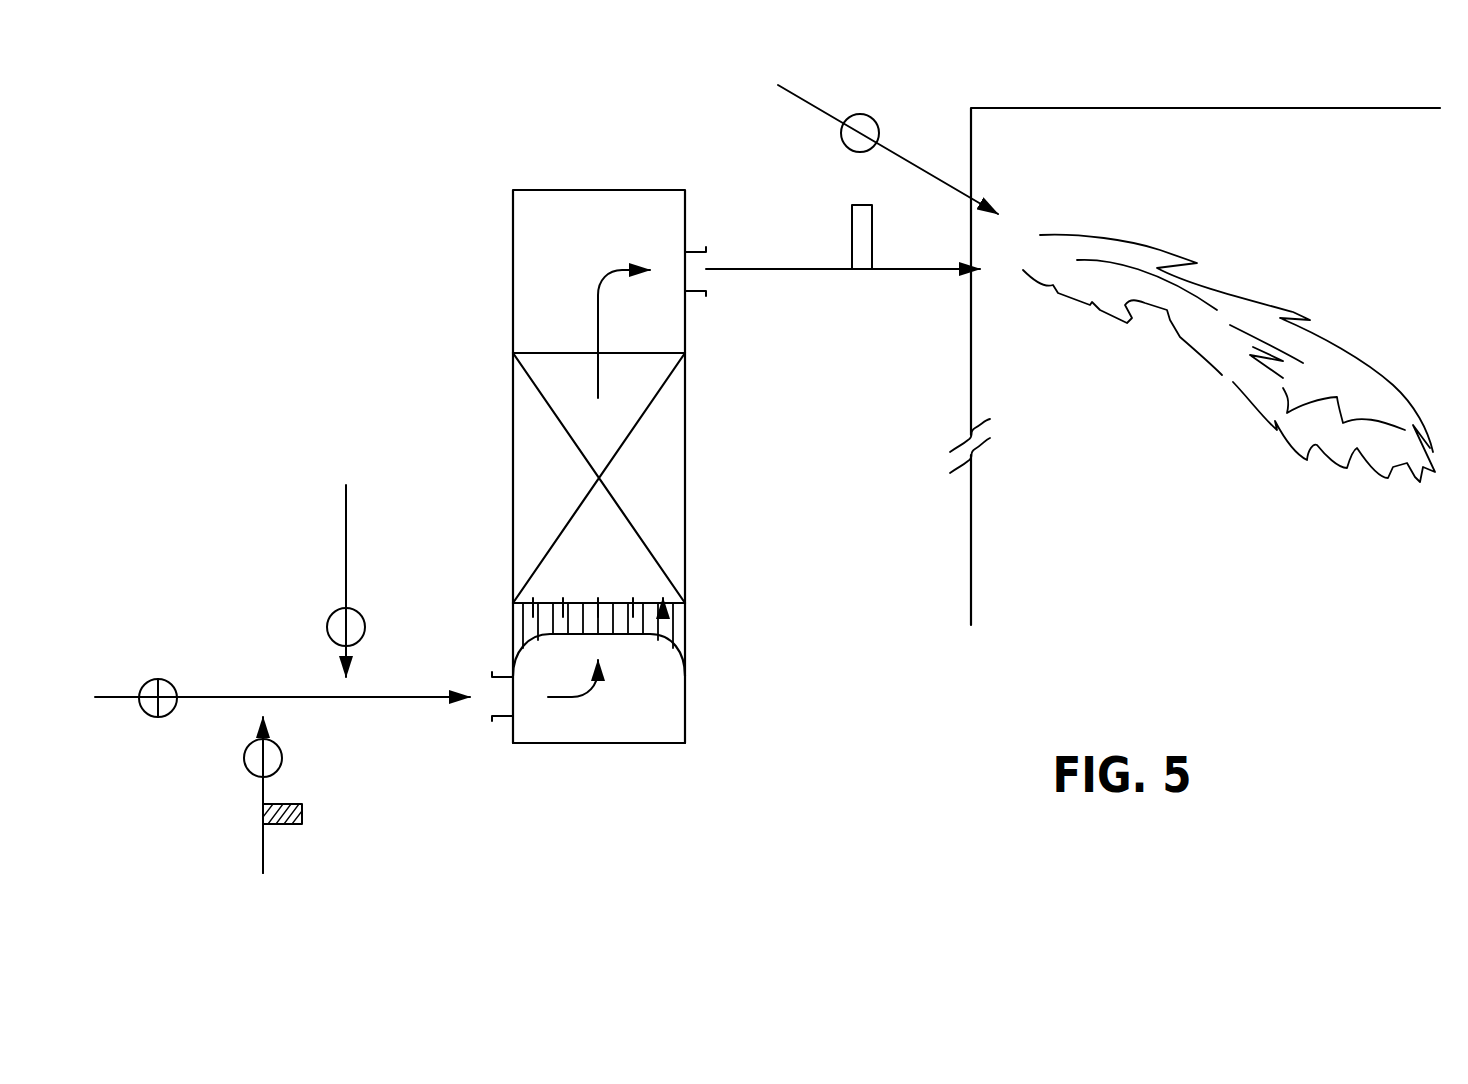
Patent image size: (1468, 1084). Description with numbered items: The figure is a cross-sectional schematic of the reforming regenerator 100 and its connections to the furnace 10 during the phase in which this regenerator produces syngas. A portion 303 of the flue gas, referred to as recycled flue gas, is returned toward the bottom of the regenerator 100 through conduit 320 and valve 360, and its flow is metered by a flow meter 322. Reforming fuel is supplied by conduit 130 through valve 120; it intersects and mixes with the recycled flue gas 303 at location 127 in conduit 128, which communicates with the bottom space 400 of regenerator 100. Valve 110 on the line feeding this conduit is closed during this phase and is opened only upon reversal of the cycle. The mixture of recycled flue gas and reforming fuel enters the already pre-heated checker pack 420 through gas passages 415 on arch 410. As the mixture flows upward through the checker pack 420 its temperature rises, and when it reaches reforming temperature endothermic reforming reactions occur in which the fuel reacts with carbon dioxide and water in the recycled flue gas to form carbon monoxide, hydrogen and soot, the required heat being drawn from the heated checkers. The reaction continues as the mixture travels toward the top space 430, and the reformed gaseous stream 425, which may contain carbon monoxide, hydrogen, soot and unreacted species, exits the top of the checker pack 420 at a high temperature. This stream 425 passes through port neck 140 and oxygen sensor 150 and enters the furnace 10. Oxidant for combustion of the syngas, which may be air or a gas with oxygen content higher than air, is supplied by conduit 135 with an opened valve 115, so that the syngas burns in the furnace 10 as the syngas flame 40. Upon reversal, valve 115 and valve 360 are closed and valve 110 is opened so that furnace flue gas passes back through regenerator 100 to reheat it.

The furnace 10 is at (1192, 108).
The syngas flame 40 is at (1270, 300).
The regenerator 100 is at (587, 190).
The valve 110 is at (168, 680).
The valve 115 is at (850, 115).
The valve 120 is at (365, 627).
The location 127 is at (346, 703).
The conduit 128 is at (438, 703).
The conduit 130 is at (346, 552).
The conduit 135 is at (812, 107).
The port neck 140 is at (812, 269).
The oxygen sensor 150 is at (852, 220).
The portion of the flue gas 303 is at (263, 873).
The conduit 320 is at (263, 833).
The flow meter 322 is at (302, 814).
The valve 360 is at (245, 757).
The bottom space 400 is at (610, 722).
The arch 410 is at (677, 620).
The gas passages 415 is at (628, 628).
The checker pack 420 is at (663, 472).
The gaseous stream 425 is at (603, 287).
The top space 430 is at (532, 233).